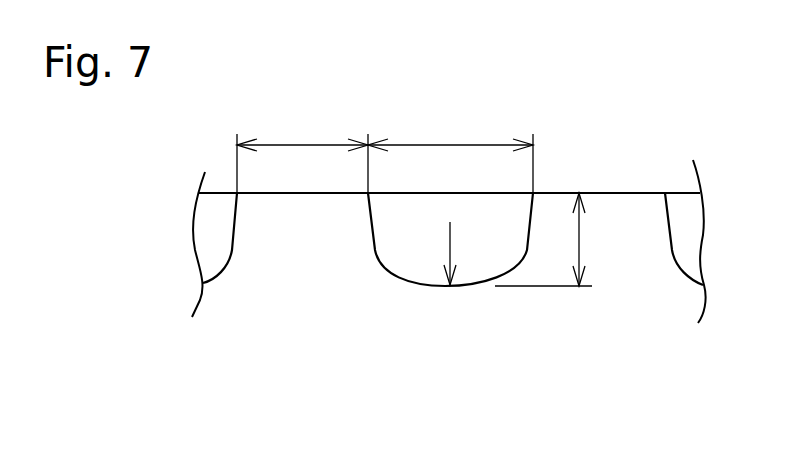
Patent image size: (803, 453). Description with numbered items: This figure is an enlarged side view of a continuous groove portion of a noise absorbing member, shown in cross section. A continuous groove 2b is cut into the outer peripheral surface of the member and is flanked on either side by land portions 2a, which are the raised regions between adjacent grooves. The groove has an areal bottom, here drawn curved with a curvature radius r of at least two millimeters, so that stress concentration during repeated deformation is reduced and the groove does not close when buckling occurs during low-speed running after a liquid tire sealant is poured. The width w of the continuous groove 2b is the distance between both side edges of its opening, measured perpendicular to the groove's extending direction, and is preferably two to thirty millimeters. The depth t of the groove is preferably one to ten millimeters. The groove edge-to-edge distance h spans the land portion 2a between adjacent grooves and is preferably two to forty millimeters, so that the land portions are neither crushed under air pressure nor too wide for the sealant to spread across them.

The land portion 2a is at (288, 255).
The continuous groove 2b is at (409, 258).
The groove edge-to-edge distance h is at (302, 151).
The width of the continuous groove w is at (450, 151).
The curvature radius of the groove bottom r is at (457, 240).
The depth of the continuous groove t is at (550, 239).